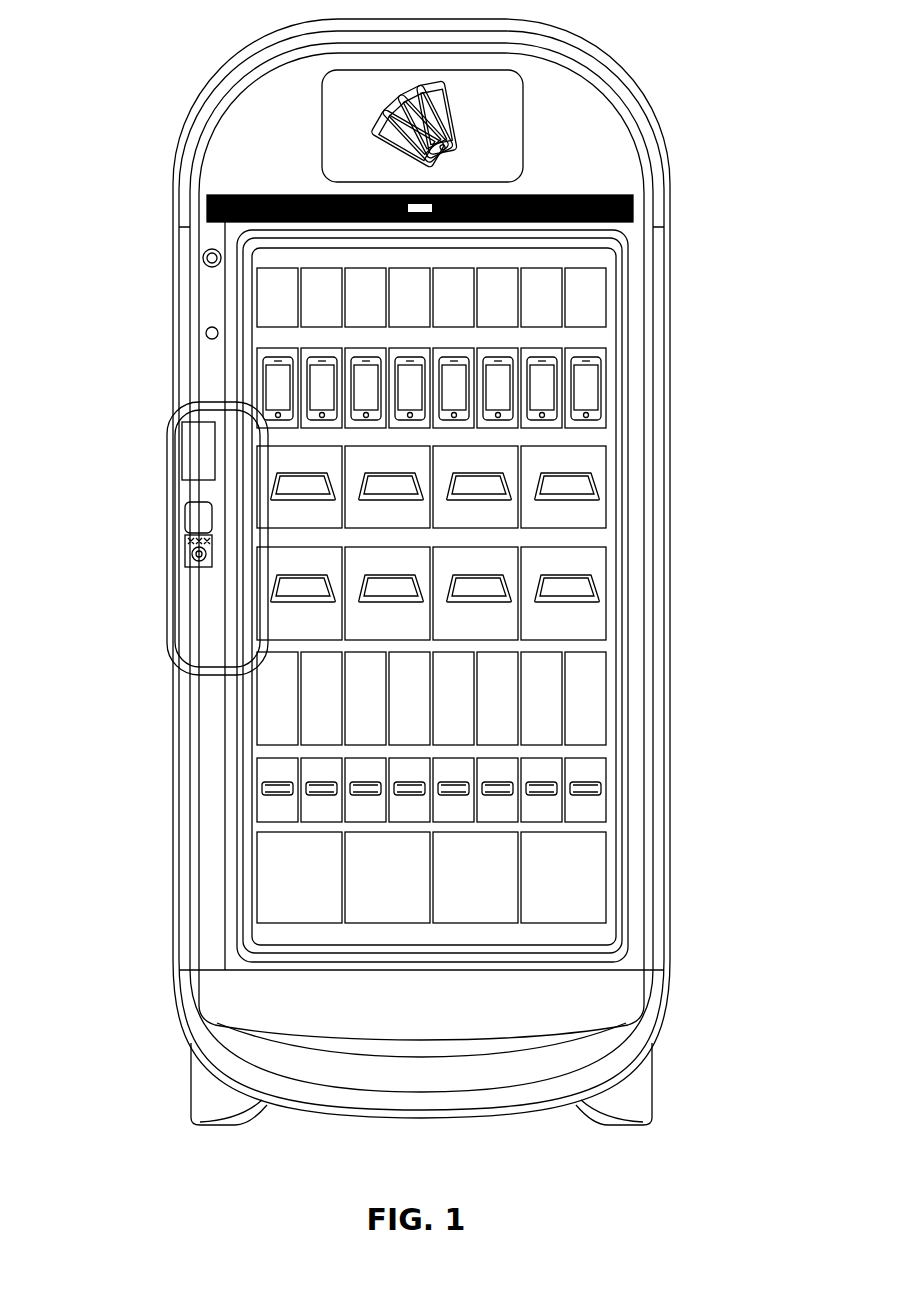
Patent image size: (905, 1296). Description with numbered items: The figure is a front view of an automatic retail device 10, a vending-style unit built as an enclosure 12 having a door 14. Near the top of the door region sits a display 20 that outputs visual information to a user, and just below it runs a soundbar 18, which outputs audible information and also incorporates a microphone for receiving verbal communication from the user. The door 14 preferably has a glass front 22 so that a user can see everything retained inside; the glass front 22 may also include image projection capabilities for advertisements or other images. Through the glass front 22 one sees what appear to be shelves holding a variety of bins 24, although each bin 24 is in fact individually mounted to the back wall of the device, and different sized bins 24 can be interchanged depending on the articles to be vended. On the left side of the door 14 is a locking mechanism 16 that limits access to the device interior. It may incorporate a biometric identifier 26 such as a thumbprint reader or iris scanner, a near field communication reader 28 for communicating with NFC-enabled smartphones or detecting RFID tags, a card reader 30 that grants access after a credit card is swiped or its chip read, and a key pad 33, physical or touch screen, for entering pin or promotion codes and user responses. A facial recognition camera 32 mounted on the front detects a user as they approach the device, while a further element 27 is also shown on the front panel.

The automatic retail device 10 is at (698, 31).
The enclosure 12 is at (673, 193).
The door 14 is at (635, 675).
The locking mechanism 16 is at (172, 675).
The soundbar 18 is at (208, 210).
The display 20 is at (507, 123).
The glass front 22 is at (590, 480).
The bin 24 is at (593, 295).
The biometric identifier 26 is at (185, 515).
The indicator 27 is at (205, 332).
The near field communication reader 28 is at (190, 560).
The card reader 30 is at (203, 567).
The facial recognition camera 32 is at (203, 257).
The key pad 33 is at (185, 440).